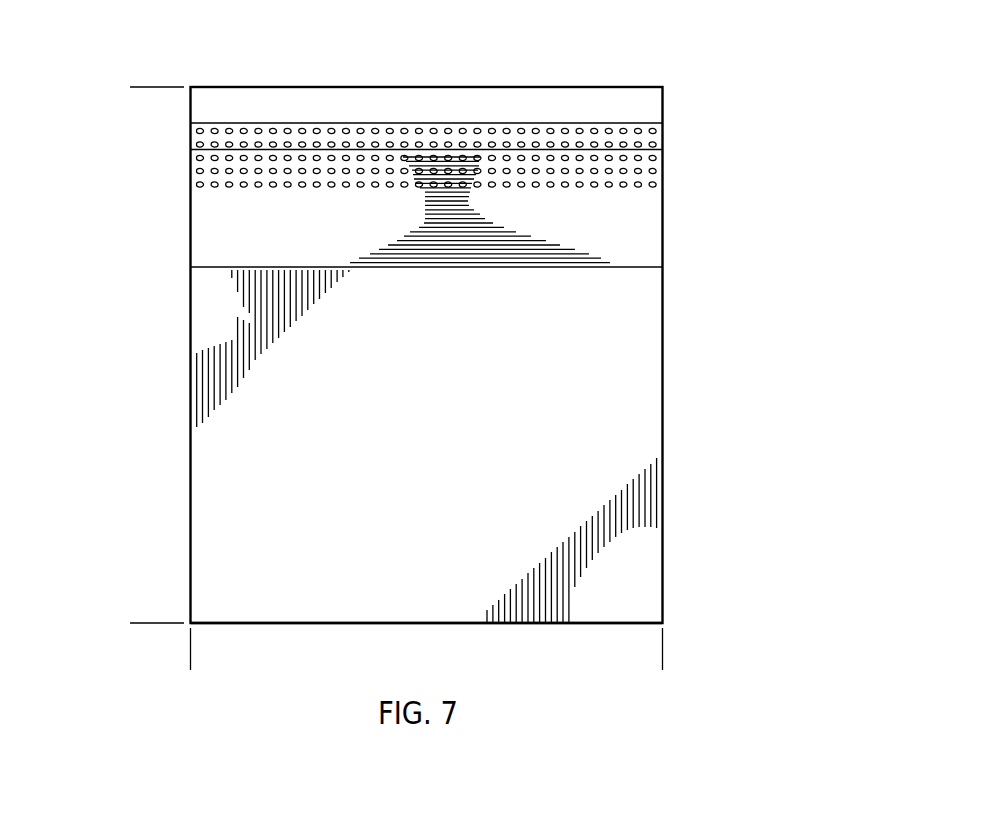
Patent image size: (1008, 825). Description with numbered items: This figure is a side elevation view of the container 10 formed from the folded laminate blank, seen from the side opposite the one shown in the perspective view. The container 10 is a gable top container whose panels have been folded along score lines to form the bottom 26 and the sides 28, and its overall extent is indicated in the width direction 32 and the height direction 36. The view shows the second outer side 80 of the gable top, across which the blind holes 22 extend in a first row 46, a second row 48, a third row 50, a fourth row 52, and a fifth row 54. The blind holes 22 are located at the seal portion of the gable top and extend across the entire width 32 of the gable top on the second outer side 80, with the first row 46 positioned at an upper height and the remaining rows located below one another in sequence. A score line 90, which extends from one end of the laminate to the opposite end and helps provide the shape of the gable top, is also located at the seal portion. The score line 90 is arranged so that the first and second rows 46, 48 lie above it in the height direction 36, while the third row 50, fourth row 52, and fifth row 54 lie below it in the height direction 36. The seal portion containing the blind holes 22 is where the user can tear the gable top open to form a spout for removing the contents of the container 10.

The container 10 is at (106, 247).
The blind holes 22 is at (394, 87).
The bottom 26 is at (498, 624).
The sides 28 is at (475, 404).
The width direction 32 is at (662, 657).
The height direction 36 is at (155, 623).
The first row 46 is at (670, 130).
The second row 48 is at (670, 144).
The third row 50 is at (670, 158).
The fourth row 52 is at (670, 174).
The fifth row 54 is at (670, 187).
The second outer side 80 is at (360, 237).
The score line 90 is at (617, 150).